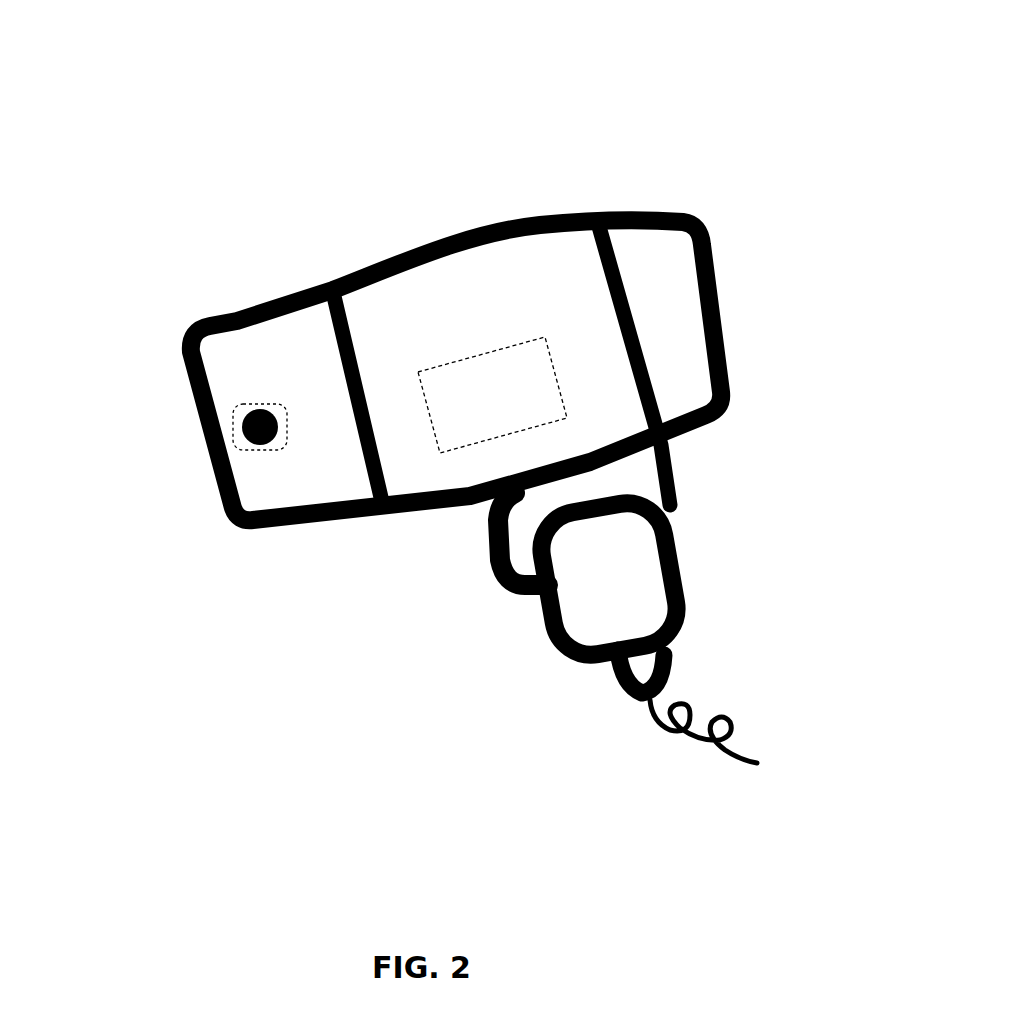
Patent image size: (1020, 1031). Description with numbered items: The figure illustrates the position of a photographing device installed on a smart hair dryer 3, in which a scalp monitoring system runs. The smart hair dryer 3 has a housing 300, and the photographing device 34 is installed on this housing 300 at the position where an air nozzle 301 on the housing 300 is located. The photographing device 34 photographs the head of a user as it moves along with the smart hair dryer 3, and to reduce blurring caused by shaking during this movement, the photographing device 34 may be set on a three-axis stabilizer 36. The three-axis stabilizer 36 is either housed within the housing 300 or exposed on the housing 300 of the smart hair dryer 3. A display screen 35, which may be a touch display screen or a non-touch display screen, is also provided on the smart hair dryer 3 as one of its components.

The smart hair dryer 3 is at (377, 124).
The housing 300 is at (428, 280).
The air nozzle 301 is at (222, 357).
The photographing device 34 is at (233, 422).
The display screen 35 is at (530, 363).
The three-axis stabilizer 36 is at (200, 440).